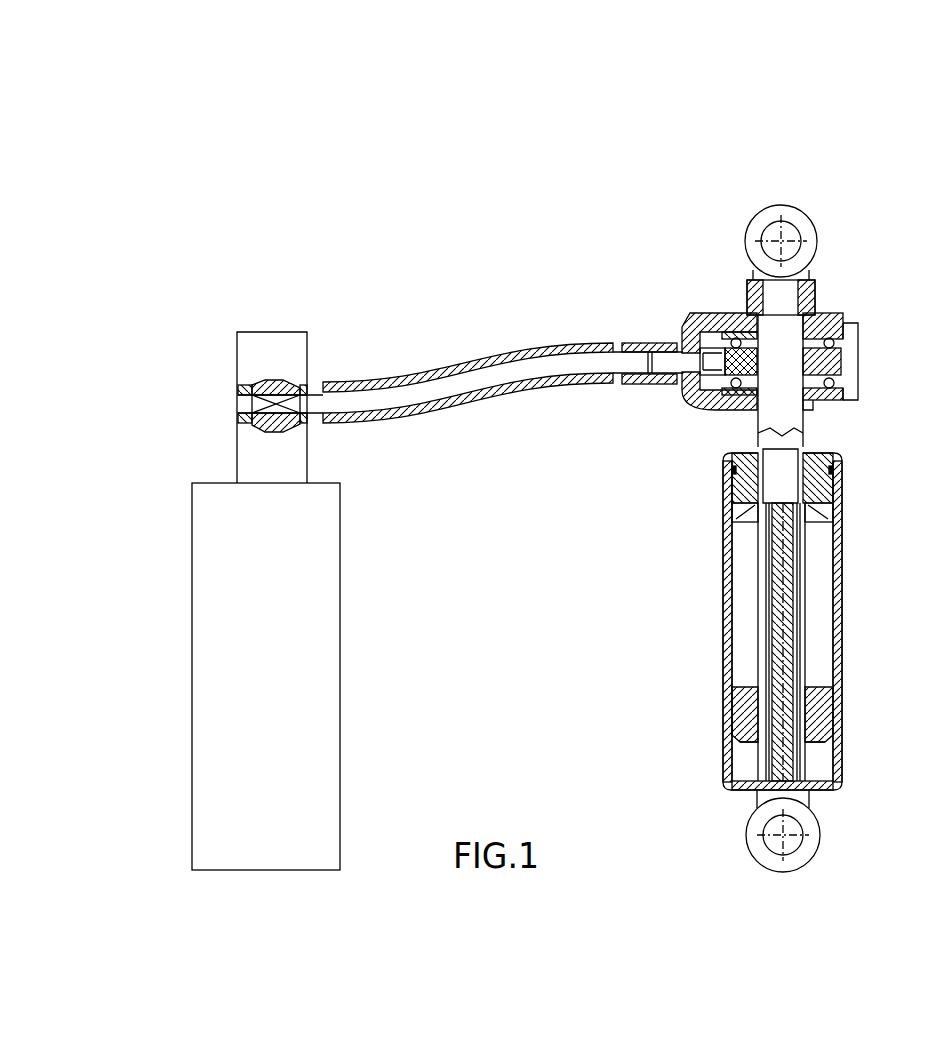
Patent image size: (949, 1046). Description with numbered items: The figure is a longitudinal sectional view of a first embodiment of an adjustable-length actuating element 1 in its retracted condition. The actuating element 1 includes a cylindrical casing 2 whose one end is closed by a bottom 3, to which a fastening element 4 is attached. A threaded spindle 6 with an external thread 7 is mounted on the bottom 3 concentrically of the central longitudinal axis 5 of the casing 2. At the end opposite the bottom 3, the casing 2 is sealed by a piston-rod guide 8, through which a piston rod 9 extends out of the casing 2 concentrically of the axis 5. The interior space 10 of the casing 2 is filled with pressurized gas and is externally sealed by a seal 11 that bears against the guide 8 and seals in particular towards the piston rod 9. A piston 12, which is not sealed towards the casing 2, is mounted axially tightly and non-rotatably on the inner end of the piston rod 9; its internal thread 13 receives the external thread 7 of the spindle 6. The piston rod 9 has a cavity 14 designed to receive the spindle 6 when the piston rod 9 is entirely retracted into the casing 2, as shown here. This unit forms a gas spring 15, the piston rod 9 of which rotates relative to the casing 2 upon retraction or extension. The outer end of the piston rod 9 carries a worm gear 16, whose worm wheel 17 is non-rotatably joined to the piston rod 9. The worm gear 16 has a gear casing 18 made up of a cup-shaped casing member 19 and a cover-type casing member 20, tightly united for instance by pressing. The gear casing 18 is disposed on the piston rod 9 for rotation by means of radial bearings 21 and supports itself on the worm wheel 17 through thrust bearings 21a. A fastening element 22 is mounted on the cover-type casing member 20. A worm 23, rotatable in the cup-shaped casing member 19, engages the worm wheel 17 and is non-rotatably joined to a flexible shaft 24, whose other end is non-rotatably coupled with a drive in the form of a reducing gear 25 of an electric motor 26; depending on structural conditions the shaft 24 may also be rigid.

The actuating element 1 is at (761, 668).
The cylindrical casing 2 is at (838, 649).
The bottom 3 is at (740, 788).
The fastening element 4 is at (758, 847).
The central longitudinal axis 5 is at (784, 597).
The threaded spindle 6 is at (781, 636).
The external thread 7 is at (772, 670).
The piston-rod guide 8 is at (744, 497).
The piston rod 9 is at (804, 551).
The interior space 10 is at (817, 761).
The seal 11 is at (827, 512).
The piston 12 is at (820, 711).
The internal thread 13 is at (766, 723).
The cavity 14 is at (778, 473).
The gas spring 15 is at (722, 537).
The worm gear 16 is at (783, 351).
The worm wheel 17 is at (842, 356).
The gear casing 18 is at (862, 367).
The cup-shaped casing member 19 is at (848, 392).
The cover-type casing member 20 is at (716, 323).
The radial bearings 21 is at (810, 330).
The thrust bearings 21a is at (842, 330).
The fastening element 22 is at (810, 236).
The worm 23 is at (712, 360).
The flexible shaft 24 is at (484, 420).
The reducing gear 25 is at (290, 462).
The electric motor 26 is at (250, 663).